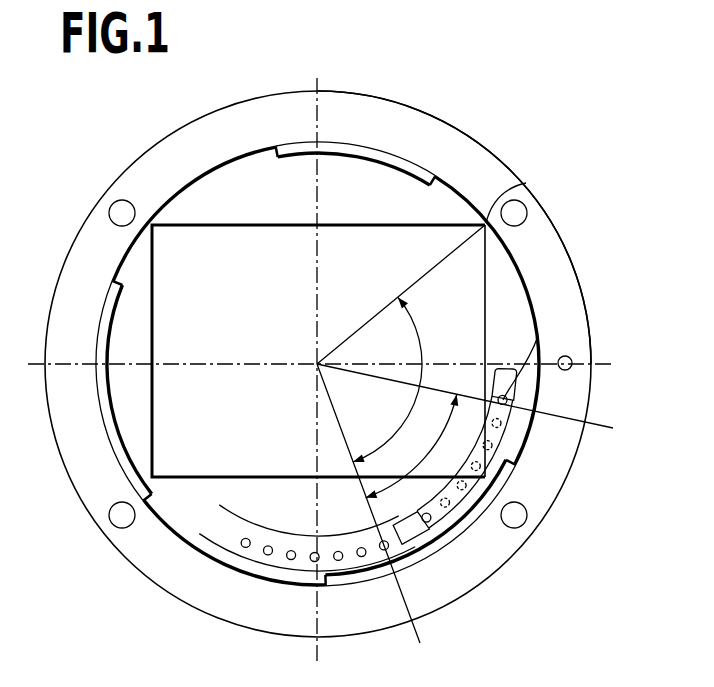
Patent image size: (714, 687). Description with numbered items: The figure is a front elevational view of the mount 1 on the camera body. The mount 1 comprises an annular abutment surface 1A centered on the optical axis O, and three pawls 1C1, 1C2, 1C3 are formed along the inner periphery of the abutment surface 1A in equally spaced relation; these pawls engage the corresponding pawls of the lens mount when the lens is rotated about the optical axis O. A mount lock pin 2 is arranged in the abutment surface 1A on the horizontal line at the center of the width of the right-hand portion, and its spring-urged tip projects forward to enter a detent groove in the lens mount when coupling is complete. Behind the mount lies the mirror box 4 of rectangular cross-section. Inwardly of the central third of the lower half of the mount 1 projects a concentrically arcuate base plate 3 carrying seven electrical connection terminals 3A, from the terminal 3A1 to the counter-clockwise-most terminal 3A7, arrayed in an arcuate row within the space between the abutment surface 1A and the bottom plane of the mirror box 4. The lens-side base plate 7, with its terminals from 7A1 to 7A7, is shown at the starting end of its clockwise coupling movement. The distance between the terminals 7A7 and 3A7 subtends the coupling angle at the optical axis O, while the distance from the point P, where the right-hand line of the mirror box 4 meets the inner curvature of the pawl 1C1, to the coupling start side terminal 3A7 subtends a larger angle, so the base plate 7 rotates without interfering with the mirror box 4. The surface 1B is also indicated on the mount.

The mount 1 is at (416, 105).
The abutment surface 1A is at (560, 258).
The mount surface 1B is at (478, 192).
The pawl 1C1 is at (438, 182).
The pawl 1C2 is at (463, 525).
The pawl 1C3 is at (106, 408).
The point P is at (526, 183).
The mount lock pin 2 is at (571, 357).
The base plate 3 is at (238, 562).
The electrical connection terminals 3A is at (314, 562).
The electrical connection terminal 3A1 is at (244, 538).
The electrical connection terminal 3A7 is at (382, 550).
The mirror box 4 is at (229, 224).
The base plate 7 is at (503, 398).
The electrical connection terminal 7A1 is at (430, 522).
The electrical connection terminal 7A7 is at (540, 334).
The optical axis O is at (451, 434).